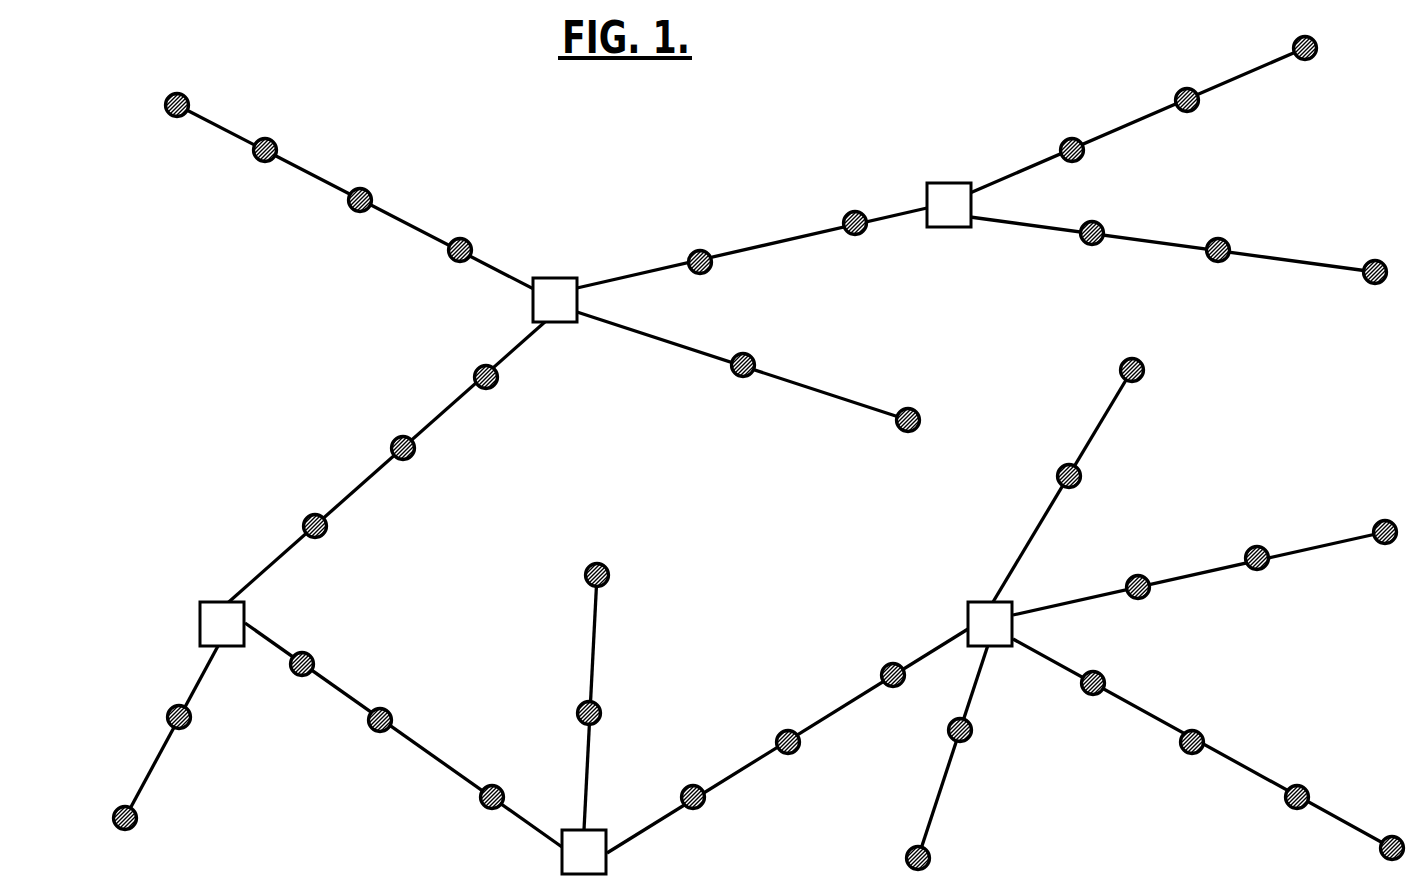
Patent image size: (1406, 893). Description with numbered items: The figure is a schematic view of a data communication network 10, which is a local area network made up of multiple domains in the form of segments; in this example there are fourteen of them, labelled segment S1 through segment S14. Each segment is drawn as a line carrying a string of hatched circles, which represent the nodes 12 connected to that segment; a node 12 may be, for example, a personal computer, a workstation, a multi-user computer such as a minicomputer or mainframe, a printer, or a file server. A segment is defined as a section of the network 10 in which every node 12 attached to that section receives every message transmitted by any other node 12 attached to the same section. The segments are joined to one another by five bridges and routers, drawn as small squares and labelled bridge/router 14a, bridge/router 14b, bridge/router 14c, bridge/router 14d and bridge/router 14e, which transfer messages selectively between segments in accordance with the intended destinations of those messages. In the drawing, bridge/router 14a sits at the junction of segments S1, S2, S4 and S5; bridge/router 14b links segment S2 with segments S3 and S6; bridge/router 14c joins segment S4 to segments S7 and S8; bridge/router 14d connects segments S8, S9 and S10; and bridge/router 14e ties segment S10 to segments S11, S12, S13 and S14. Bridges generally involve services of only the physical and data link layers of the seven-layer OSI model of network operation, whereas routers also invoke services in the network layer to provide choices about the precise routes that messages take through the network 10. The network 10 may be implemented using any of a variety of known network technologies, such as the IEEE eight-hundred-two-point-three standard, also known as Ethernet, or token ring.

The data communication network 10 is at (262, 332).
The nodes 12 is at (374, 199).
The bridge/router 14a is at (565, 322).
The bridge/router 14b is at (952, 233).
The bridge/router 14c is at (200, 603).
The bridge/router 14d is at (607, 862).
The bridge/router 14e is at (968, 606).
The segment S1 is at (382, 197).
The segment S2 is at (752, 246).
The segment S3 is at (1123, 126).
The segment S4 is at (361, 484).
The segment S5 is at (819, 387).
The segment S6 is at (1280, 254).
The segment S7 is at (149, 767).
The segment S8 is at (409, 748).
The segment S9 is at (591, 650).
The segment S10 is at (837, 707).
The segment S11 is at (948, 781).
The segment S12 is at (1024, 546).
The segment S13 is at (1318, 544).
The segment S14 is at (1333, 812).